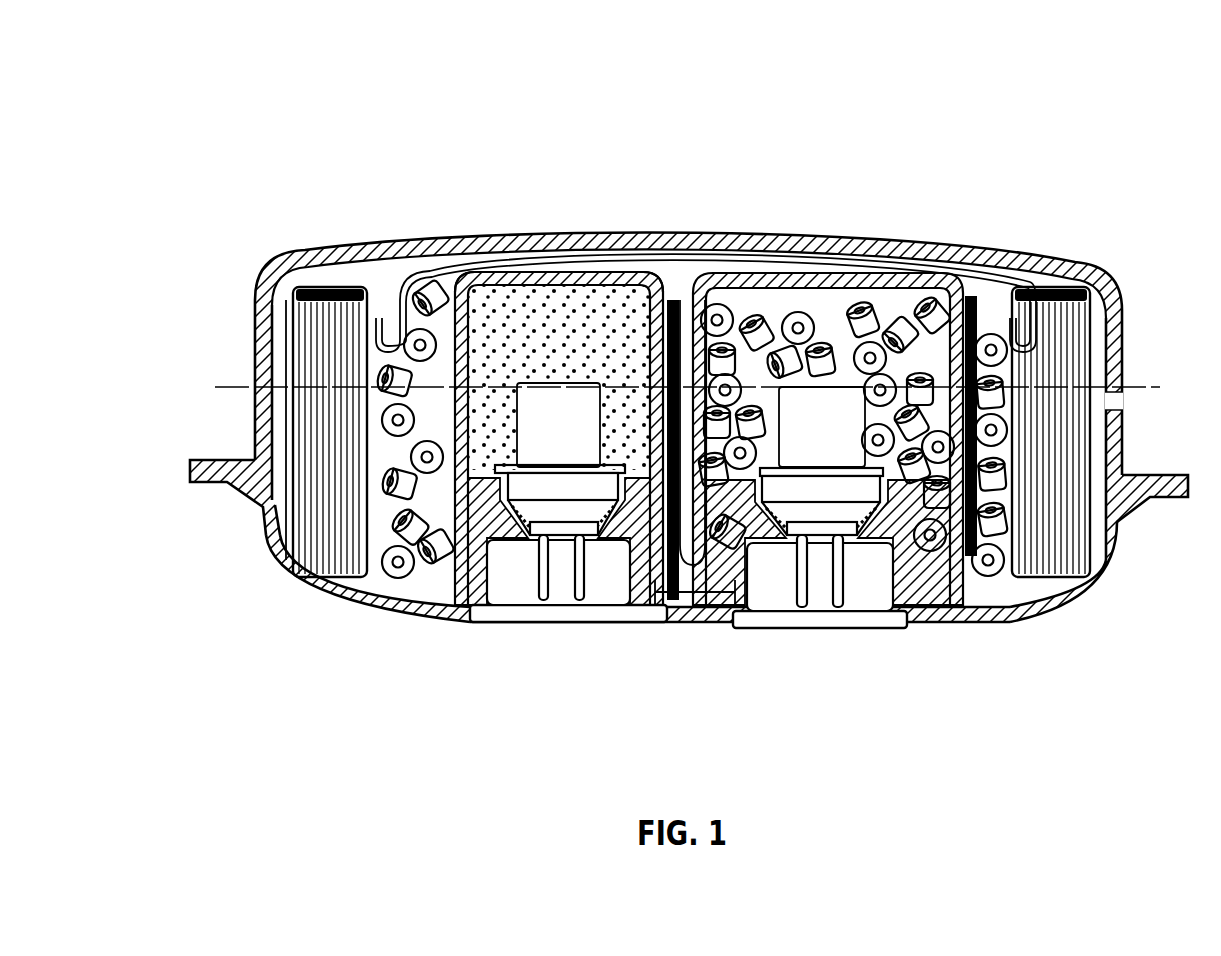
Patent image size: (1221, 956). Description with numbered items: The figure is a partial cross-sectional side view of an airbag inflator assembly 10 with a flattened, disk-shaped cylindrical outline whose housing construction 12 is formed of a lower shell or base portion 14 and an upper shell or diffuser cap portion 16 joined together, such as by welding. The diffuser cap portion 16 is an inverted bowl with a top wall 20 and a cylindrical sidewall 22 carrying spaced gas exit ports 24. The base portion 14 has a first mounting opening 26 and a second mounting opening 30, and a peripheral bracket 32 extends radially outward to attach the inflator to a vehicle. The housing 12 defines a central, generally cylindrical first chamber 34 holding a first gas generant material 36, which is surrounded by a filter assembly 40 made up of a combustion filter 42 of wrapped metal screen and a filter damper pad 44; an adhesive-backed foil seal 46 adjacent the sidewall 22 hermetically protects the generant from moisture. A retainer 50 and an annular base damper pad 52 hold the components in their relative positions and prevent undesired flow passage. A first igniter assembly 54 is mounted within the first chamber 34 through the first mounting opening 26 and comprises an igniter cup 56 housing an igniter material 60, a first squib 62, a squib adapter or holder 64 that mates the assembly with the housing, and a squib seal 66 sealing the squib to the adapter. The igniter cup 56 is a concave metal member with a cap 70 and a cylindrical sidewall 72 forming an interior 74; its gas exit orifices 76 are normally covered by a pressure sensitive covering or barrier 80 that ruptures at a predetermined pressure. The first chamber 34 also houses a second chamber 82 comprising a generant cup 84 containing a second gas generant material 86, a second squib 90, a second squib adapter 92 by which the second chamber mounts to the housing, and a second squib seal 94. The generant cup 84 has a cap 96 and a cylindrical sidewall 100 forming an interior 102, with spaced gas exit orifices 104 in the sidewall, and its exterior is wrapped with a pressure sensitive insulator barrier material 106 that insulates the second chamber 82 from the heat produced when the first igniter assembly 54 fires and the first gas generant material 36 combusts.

The inflator assembly 10 is at (649, 396).
The housing construction 12 is at (694, 383).
The base portion 14 is at (1005, 632).
The diffuser cap portion 16 is at (545, 240).
The top wall 20 is at (666, 223).
The cylindrical sidewall 22 is at (1124, 355).
The gas exit ports 24 is at (1125, 400).
The first mounting opening 26 is at (445, 615).
The second mounting opening 30 is at (725, 578).
The peripheral bracket 32 is at (1165, 498).
The first chamber 34 is at (670, 308).
The first gas generant material 36 is at (362, 613).
The filter assembly 40 is at (285, 495).
The combustion filter 42 is at (260, 330).
The filter damper pad 44 is at (335, 295).
The foil seal 46 is at (300, 320).
The retainer 50 is at (415, 305).
The annular base damper pad 52 is at (955, 605).
The first igniter assembly 54 is at (543, 614).
The igniter cup 56 is at (490, 280).
The igniter material 60 is at (466, 308).
The first igniter device or squib 62 is at (558, 488).
The squib adapter or holder 64 is at (622, 530).
The squib seal 66 is at (640, 578).
The cap 70 is at (558, 329).
The cylindrical sidewall 72 is at (403, 302).
The interior 74 is at (615, 298).
The gas exit orifices 76 is at (378, 372).
The pressure sensitive covering or barrier 80 is at (380, 335).
The second chamber 82 is at (859, 346).
The generant cup 84 is at (890, 285).
The second gas generant material 86 is at (740, 320).
The second igniter device or squib 90 is at (822, 492).
The second squib adapter 92 is at (940, 578).
The second squib seal 94 is at (895, 560).
The cap 96 is at (838, 298).
The cylindrical sidewall 100 is at (965, 305).
The interior 102 is at (905, 312).
The gas exit orifices 104 is at (1050, 600).
The pressure sensitive insulator barrier material 106 is at (1022, 290).